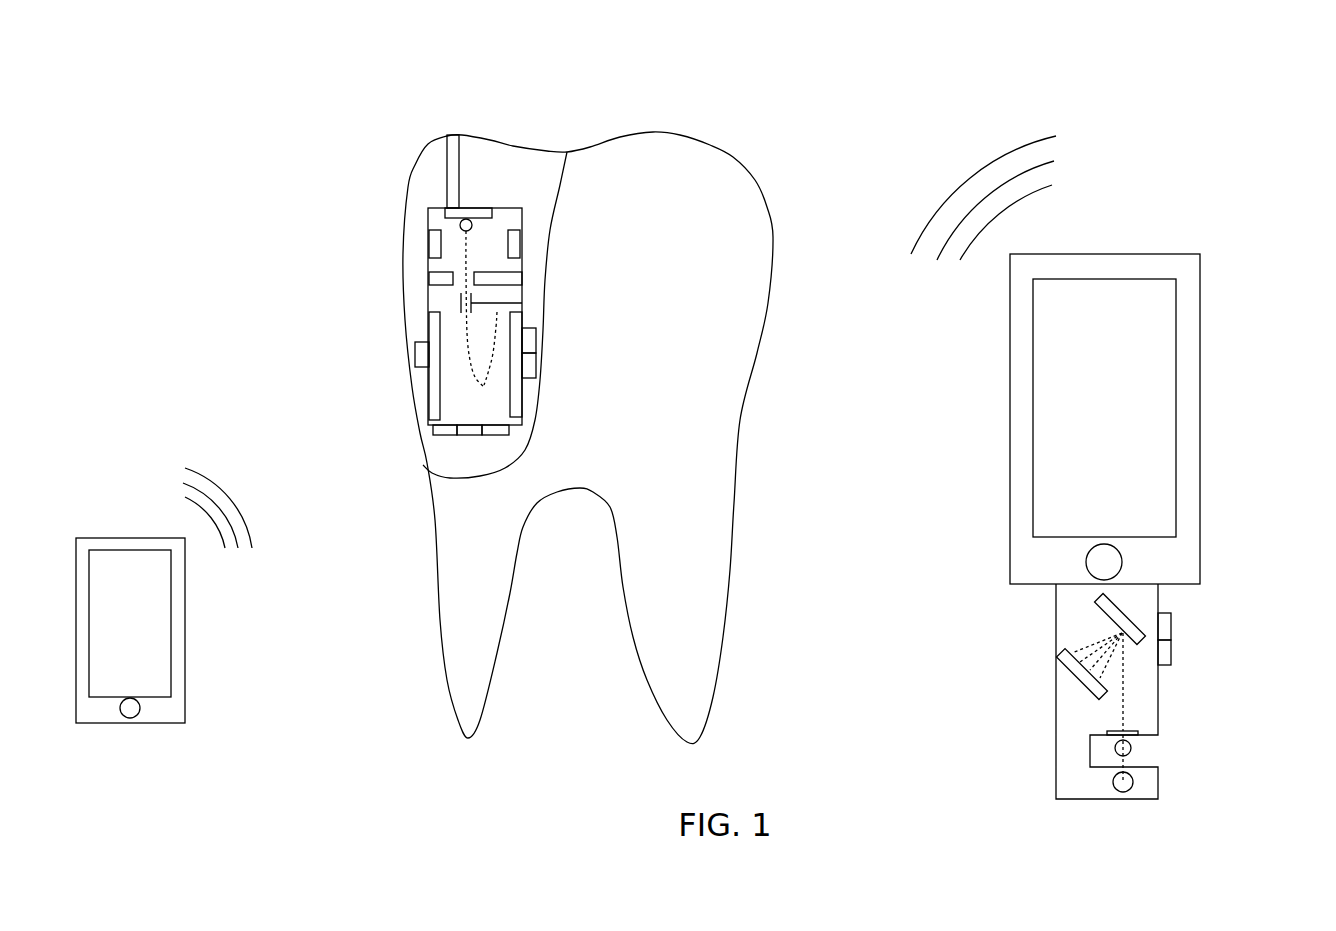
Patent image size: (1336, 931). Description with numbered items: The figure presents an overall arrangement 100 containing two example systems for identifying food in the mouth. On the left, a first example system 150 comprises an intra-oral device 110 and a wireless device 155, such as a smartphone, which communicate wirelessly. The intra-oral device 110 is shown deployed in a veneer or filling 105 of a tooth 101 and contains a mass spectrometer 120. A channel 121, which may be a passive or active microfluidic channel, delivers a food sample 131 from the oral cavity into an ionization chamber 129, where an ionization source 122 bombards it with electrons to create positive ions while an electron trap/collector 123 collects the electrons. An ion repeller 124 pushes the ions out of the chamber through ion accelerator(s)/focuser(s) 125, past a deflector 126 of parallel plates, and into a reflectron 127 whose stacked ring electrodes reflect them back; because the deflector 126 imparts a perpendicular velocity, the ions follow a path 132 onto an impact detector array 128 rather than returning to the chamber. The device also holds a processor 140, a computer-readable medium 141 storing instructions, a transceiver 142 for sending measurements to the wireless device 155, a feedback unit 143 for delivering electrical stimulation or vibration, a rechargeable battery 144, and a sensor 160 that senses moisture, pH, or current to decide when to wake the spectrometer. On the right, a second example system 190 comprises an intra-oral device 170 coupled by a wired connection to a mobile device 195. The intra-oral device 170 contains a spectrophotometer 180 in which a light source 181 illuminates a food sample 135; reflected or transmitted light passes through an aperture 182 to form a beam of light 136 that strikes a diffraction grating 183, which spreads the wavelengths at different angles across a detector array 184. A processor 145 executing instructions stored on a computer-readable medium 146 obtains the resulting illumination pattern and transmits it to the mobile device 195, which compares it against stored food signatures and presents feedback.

The dental monitoring system 100 is at (727, 57).
The tooth 101 is at (616, 191).
The veneer or filling 105 is at (453, 355).
The intra-oral device 110 is at (435, 419).
The mass spectrometer 120 is at (427, 277).
The channel 121 is at (440, 155).
The ionization source 122 is at (427, 243).
The electron trap/collector 123 is at (523, 238).
The ion repeller 124 is at (445, 213).
The ion accelerator(s)/focuser(s) 125 is at (427, 283).
The deflector 126 is at (458, 298).
The reflectron 127 is at (427, 402).
The impact detector array 128 is at (523, 309).
The ionization chamber 129 is at (497, 218).
The food sample 131 is at (459, 225).
The path 132 is at (487, 385).
The processor 140 is at (537, 338).
The computer-readable medium 141 is at (537, 363).
The transceiver 142 is at (413, 355).
The feedback unit 143 is at (442, 437).
The rechargeable battery 144 is at (469, 437).
The sensor 160 is at (493, 437).
The first example system 150 is at (164, 420).
The wireless device 155 is at (113, 627).
The second example system 190 is at (1120, 468).
The mobile device 195 is at (1087, 408).
The intra-oral device 170 is at (1130, 707).
The spectrophotometer 180 is at (1056, 599).
The light source 181 is at (1128, 797).
The aperture 182 is at (1125, 728).
The diffraction grating 183 is at (1127, 608).
The detector array 184 is at (1075, 682).
The food sample 135 is at (1135, 748).
The beam of light 136 is at (1127, 695).
The processor 145 is at (1171, 625).
The computer-readable medium 146 is at (1171, 650).